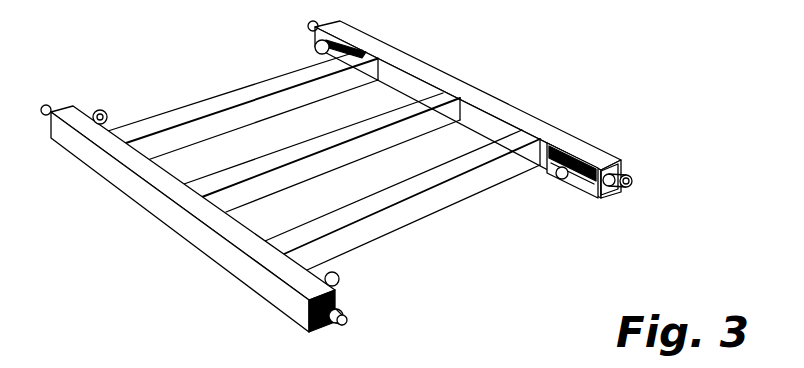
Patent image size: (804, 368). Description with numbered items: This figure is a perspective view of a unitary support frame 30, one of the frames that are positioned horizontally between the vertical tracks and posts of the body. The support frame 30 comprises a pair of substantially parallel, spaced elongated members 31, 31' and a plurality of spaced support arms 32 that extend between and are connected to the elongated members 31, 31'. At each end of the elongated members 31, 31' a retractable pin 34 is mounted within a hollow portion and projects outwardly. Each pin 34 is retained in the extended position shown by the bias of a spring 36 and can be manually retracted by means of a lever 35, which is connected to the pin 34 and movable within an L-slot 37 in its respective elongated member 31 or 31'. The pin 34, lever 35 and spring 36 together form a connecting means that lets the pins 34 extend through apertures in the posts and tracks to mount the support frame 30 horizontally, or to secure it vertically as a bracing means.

The unitary support frame 30 is at (417, 239).
The elongated member 31 is at (468, 109).
The elongated member 31' is at (195, 219).
The support arm 32 is at (287, 103).
The retractable pin 34 is at (45, 105).
The lever 35 is at (558, 181).
The spring 36 is at (573, 147).
The L-slot 37 is at (330, 42).